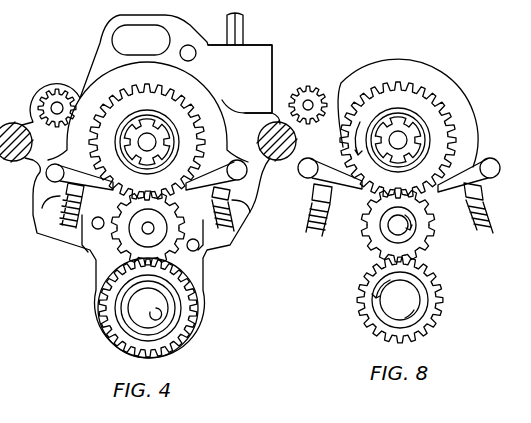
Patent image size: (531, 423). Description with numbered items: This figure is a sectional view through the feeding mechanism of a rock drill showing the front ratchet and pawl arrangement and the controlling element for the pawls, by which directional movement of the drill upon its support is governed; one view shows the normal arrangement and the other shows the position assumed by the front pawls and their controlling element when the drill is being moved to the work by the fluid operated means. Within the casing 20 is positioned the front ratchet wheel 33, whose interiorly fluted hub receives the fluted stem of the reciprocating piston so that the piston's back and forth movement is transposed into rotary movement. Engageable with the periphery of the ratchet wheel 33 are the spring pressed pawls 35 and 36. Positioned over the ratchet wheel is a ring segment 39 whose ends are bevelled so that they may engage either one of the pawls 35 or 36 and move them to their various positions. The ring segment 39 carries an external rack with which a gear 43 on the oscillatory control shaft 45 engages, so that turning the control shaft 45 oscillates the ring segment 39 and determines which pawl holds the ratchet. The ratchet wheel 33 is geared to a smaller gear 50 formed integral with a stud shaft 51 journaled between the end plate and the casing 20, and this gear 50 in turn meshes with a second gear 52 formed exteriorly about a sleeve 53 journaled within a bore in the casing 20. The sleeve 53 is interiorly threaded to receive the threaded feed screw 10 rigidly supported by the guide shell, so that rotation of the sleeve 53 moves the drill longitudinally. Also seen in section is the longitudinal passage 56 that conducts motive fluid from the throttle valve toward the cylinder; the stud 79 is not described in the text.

In FIG. 4, the threaded feed screw 10 is at (152, 311).
In FIG. 4, the casing 20 is at (257, 77).
In FIG. 4, the ratchet wheel 33 is at (160, 107).
In FIG. 8, the ratchet wheel 33 is at (430, 120).
In FIG. 4, the pawl 35 is at (268, 170).
In FIG. 8, the pawl 35 is at (450, 200).
In FIG. 4, the pawl 36 is at (82, 192).
In FIG. 8, the pawl 36 is at (352, 190).
In FIG. 4, the ring segment 39 is at (147, 68).
In FIG. 8, the ring segment 39 is at (435, 80).
In FIG. 4, the gear 43 is at (43, 100).
In FIG. 8, the gear 43 is at (317, 85).
In FIG. 4, the control shaft 45 is at (58, 108).
In FIG. 4, the gear 50 is at (163, 250).
In FIG. 8, the gear 50 is at (382, 243).
In FIG. 4, the stud shaft 51 is at (140, 237).
In FIG. 4, the gear 52 is at (187, 298).
In FIG. 8, the gear 52 is at (440, 287).
In FIG. 4, the sleeve 53 is at (120, 308).
In FIG. 4, the passage 56 is at (128, 35).
In FIG. 4, the stud 79 is at (238, 35).